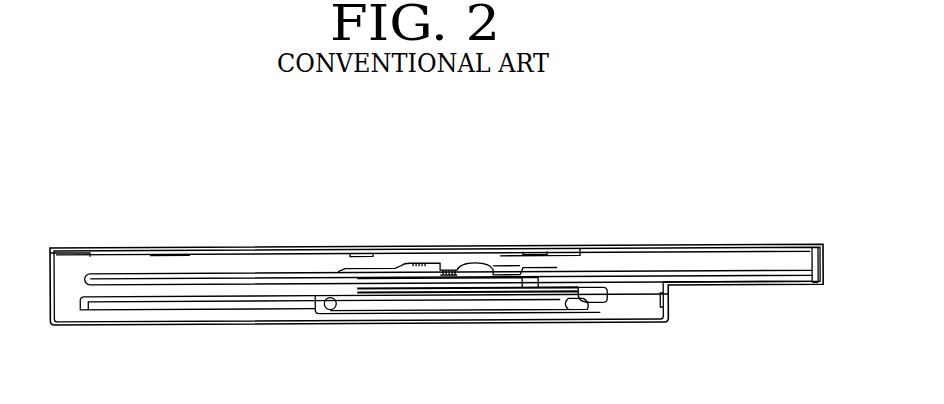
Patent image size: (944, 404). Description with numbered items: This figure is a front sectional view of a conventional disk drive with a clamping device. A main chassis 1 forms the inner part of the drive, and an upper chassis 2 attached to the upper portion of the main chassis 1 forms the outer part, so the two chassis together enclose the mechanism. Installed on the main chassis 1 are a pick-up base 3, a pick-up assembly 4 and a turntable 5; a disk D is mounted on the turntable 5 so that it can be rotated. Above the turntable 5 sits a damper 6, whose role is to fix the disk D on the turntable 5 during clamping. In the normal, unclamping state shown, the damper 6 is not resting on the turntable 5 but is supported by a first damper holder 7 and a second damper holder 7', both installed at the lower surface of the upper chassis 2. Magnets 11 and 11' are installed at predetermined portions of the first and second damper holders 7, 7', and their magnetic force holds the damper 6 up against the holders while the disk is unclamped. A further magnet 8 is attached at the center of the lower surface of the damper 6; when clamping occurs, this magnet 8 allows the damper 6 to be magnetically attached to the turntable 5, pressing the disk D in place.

The main chassis 1 is at (290, 326).
The upper chassis 2 is at (252, 248).
The pick-up base 3 is at (197, 301).
The pick-up assembly 4 is at (572, 311).
The turntable 5 is at (530, 300).
The damper 6 is at (552, 262).
The first damper holder 7 is at (83, 231).
The second damper holder 7' is at (172, 222).
The magnet 8 is at (476, 265).
The magnet 11 is at (359, 199).
The magnet 11' is at (532, 198).
The disk D is at (652, 272).